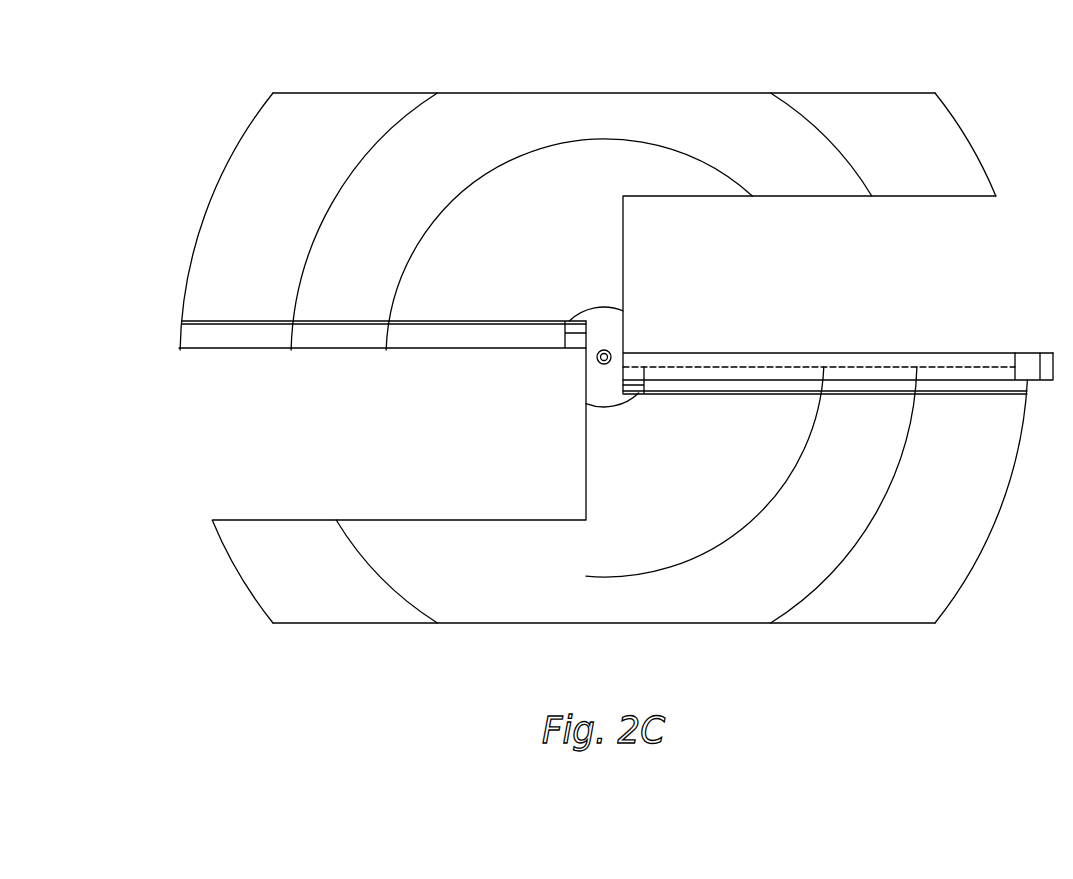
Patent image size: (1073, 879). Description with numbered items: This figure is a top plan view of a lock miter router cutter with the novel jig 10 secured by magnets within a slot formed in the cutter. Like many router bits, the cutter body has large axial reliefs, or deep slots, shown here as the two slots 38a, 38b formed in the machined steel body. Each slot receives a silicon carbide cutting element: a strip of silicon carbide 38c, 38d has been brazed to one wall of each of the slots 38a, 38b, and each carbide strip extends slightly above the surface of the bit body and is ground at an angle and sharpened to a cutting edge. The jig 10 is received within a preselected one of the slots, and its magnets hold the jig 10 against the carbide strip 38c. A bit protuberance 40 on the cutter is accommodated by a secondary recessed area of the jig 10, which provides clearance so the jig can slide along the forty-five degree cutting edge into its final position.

The jig 10 is at (975, 352).
The bit protuberance 40 is at (728, 118).
The slot 38a is at (817, 196).
The slot 38b is at (425, 520).
The carbide cutting element 38c is at (875, 367).
The carbide cutting element 38d is at (332, 351).